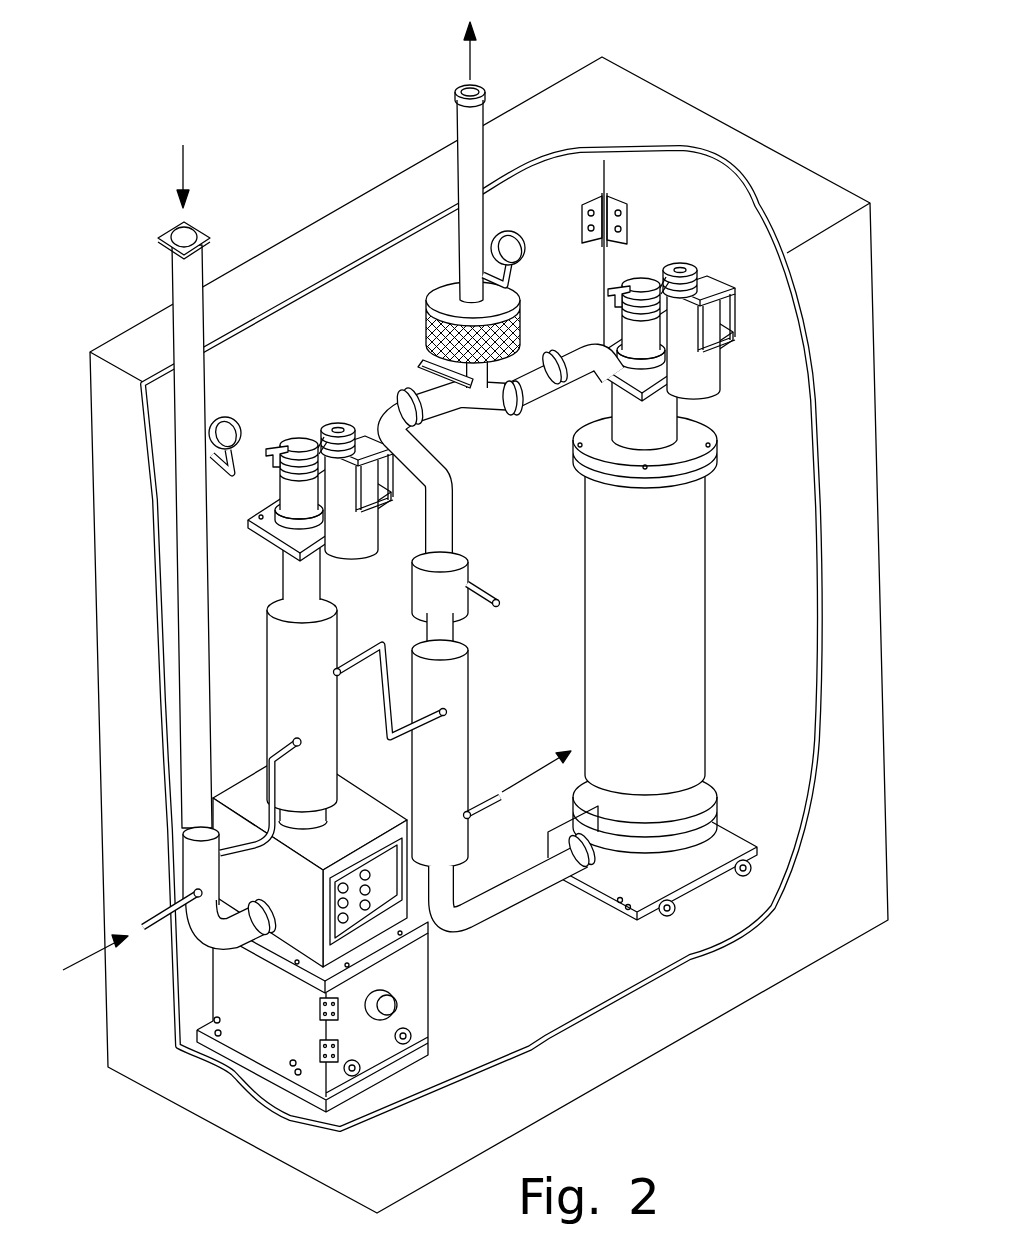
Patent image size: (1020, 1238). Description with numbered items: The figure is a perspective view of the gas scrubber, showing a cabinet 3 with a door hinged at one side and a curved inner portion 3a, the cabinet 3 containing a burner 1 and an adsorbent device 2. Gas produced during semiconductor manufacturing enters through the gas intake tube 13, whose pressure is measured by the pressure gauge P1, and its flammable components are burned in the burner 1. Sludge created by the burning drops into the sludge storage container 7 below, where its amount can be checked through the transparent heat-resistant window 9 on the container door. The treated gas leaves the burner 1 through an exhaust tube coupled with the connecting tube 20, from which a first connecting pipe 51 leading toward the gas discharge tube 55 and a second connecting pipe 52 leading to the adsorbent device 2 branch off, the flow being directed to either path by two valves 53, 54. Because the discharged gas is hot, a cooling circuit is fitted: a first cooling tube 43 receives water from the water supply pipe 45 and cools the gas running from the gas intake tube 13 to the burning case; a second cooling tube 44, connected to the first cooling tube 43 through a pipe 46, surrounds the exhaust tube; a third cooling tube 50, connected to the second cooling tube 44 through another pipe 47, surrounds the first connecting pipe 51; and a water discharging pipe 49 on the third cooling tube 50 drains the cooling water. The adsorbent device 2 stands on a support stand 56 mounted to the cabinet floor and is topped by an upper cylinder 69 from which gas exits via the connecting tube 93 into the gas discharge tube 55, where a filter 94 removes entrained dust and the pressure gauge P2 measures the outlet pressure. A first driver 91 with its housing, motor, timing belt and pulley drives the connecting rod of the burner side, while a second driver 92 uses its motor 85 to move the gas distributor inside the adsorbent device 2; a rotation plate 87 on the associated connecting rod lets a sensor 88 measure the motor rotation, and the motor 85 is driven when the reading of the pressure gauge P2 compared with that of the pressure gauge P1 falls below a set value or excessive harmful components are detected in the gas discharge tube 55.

The burner 1 is at (456, 635).
The adsorbent device 2 is at (717, 617).
The cabinet 3 is at (489, 635).
The curved inner panel 3a is at (732, 242).
The sludge storage container 7 is at (323, 930).
The window 9 is at (389, 1006).
The gas intake tube 13 is at (188, 458).
The connecting tube 20 is at (335, 566).
The first cooling tube 43 is at (193, 862).
The second cooling tube 44 is at (287, 654).
The water supply pipe 45 is at (158, 917).
The pipe 46 is at (238, 833).
The pipe 47 is at (362, 674).
The water discharging pipe 49 is at (488, 810).
The third cooling tube 50 is at (455, 729).
The first connecting pipe 51 is at (448, 628).
The second connecting pipe 52 is at (444, 490).
The valve 53 is at (487, 588).
The valve 54 is at (446, 390).
The gas discharge tube 55 is at (460, 123).
The support stand 56 is at (738, 840).
The upper cylinder 69 is at (655, 412).
The motor 85 is at (714, 368).
The rotation plate 87 is at (630, 284).
The sensor 88 is at (612, 298).
The first driver 91 is at (298, 426).
The second driver 92 is at (665, 286).
The connecting tube 93 is at (583, 380).
The filter 94 is at (428, 324).
The pressure gauge P1 is at (233, 414).
The pressure gauge P2 is at (524, 246).